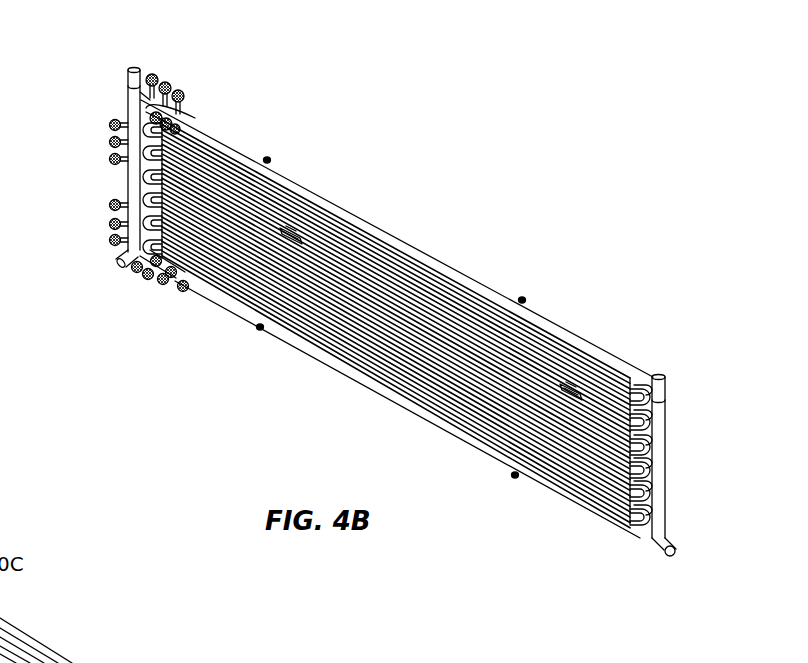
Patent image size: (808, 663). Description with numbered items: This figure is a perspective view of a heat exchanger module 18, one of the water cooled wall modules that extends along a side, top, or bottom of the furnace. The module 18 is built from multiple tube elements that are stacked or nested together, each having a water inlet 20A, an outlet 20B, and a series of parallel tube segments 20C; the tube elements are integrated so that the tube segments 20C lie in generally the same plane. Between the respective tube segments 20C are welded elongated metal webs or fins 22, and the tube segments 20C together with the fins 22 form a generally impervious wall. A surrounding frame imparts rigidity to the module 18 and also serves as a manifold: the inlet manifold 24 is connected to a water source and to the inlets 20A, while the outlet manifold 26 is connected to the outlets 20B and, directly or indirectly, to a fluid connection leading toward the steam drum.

The heat exchanger module 18 is at (468, 231).
The water inlet 20A is at (168, 128).
The outlet 20B is at (165, 283).
The parallel tube segments 20C is at (321, 210).
The fins 22 is at (370, 352).
The inlet manifold 24 is at (130, 184).
The outlet manifold 26 is at (660, 458).